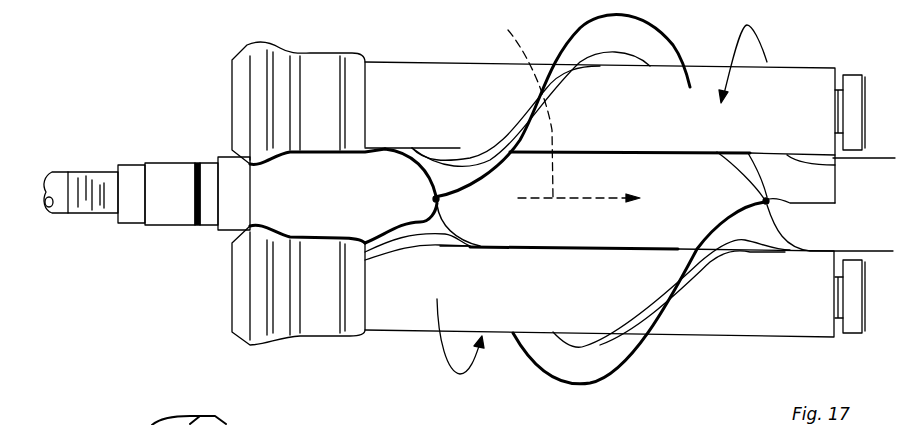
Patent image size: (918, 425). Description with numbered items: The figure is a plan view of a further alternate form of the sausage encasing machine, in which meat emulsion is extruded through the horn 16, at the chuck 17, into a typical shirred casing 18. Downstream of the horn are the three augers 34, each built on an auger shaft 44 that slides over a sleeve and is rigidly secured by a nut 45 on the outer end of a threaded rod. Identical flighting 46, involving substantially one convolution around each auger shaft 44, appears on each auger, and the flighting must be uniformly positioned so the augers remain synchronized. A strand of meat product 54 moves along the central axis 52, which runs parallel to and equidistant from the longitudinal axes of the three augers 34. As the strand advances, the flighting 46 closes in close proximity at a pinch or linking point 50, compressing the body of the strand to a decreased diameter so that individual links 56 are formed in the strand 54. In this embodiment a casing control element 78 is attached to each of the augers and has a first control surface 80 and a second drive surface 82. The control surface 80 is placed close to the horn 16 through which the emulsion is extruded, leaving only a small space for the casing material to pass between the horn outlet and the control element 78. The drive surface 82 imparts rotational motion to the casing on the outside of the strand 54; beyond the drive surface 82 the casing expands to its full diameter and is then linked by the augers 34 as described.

The horn 16 is at (61, 172).
The chuck 17 is at (180, 172).
The shirred casing 18 is at (104, 170).
The augers 34 is at (788, 52).
The auger shaft 44 is at (686, 80).
The nut 45 is at (861, 86).
The flighting 46 is at (653, 42).
The linking point 50 is at (439, 166).
The central axis 52 is at (506, 27).
The strand of meat product 54 is at (369, 170).
The links 56 is at (578, 178).
The casing control element 78 is at (230, 36).
The control surface 80 is at (262, 42).
The drive surface 82 is at (320, 63).